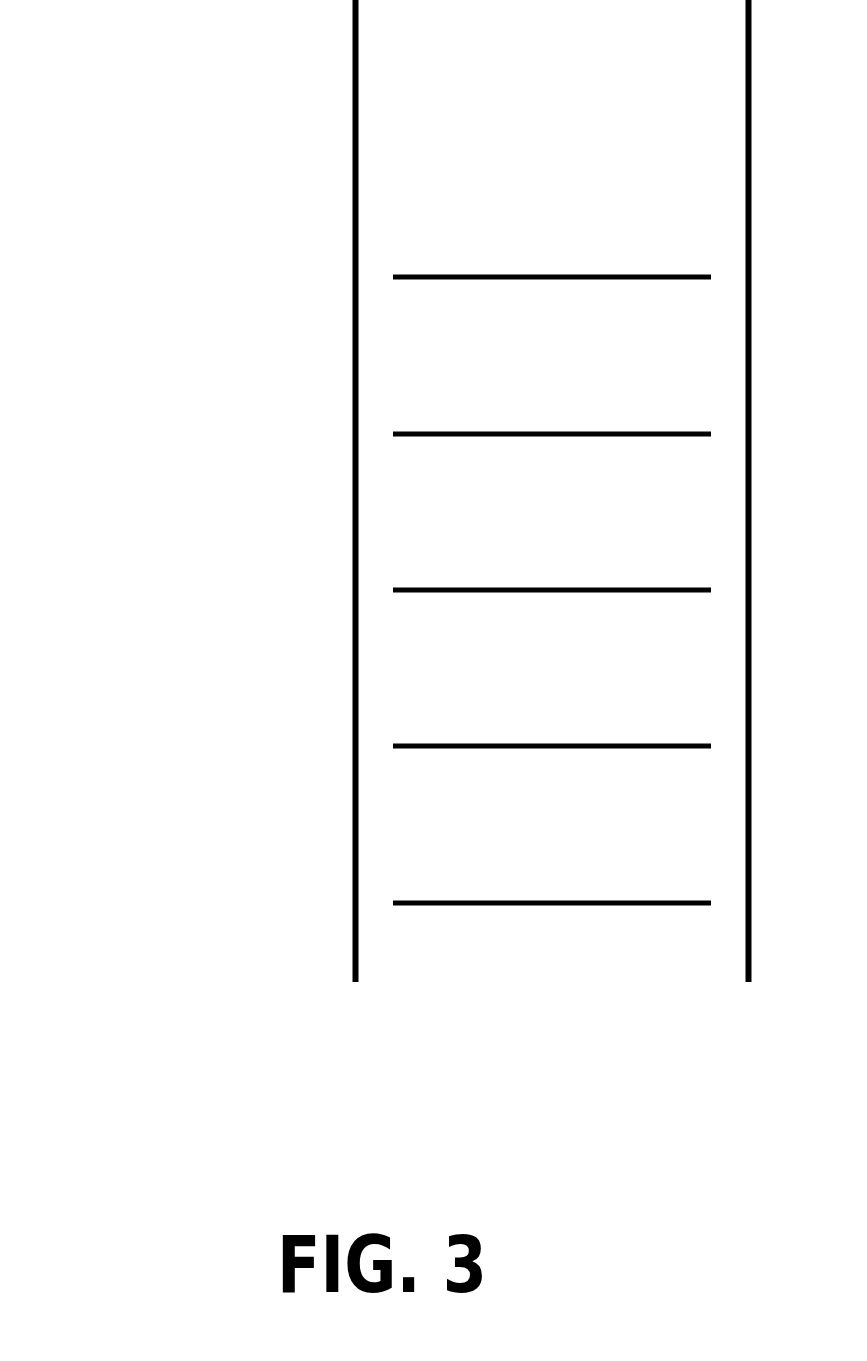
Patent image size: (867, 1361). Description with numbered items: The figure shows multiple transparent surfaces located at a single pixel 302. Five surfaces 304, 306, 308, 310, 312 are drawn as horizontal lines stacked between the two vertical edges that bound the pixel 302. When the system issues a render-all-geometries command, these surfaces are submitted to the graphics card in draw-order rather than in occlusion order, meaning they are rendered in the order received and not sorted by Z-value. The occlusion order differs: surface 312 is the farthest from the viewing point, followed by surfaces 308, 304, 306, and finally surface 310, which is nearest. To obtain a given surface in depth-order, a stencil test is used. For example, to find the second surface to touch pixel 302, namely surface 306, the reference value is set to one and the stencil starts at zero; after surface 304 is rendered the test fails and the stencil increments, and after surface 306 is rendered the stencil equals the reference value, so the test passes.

The pixel 302 is at (552, 567).
The surface 304 is at (382, 587).
The surface 306 is at (382, 431).
The surface 308 is at (382, 743).
The surface 310 is at (382, 274).
The surface 312 is at (382, 900).